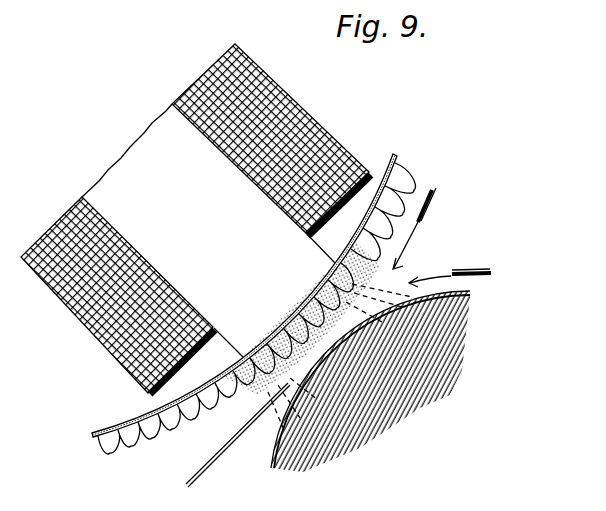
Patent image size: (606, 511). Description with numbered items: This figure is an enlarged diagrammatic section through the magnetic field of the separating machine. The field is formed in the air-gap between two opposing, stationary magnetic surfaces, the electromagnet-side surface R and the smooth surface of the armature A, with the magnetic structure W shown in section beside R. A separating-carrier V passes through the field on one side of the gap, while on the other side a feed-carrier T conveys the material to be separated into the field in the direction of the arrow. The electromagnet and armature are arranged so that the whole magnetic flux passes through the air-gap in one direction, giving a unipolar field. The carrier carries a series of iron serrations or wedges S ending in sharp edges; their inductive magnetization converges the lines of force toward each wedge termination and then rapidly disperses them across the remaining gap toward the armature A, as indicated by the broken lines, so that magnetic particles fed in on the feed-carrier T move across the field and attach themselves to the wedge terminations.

The walls W is at (302, 109).
The stationary magnetic surface R is at (172, 216).
The band V is at (114, 426).
The iron serrations or wedges S is at (256, 308).
The feed-carrier T is at (267, 459).
The armature A is at (360, 382).